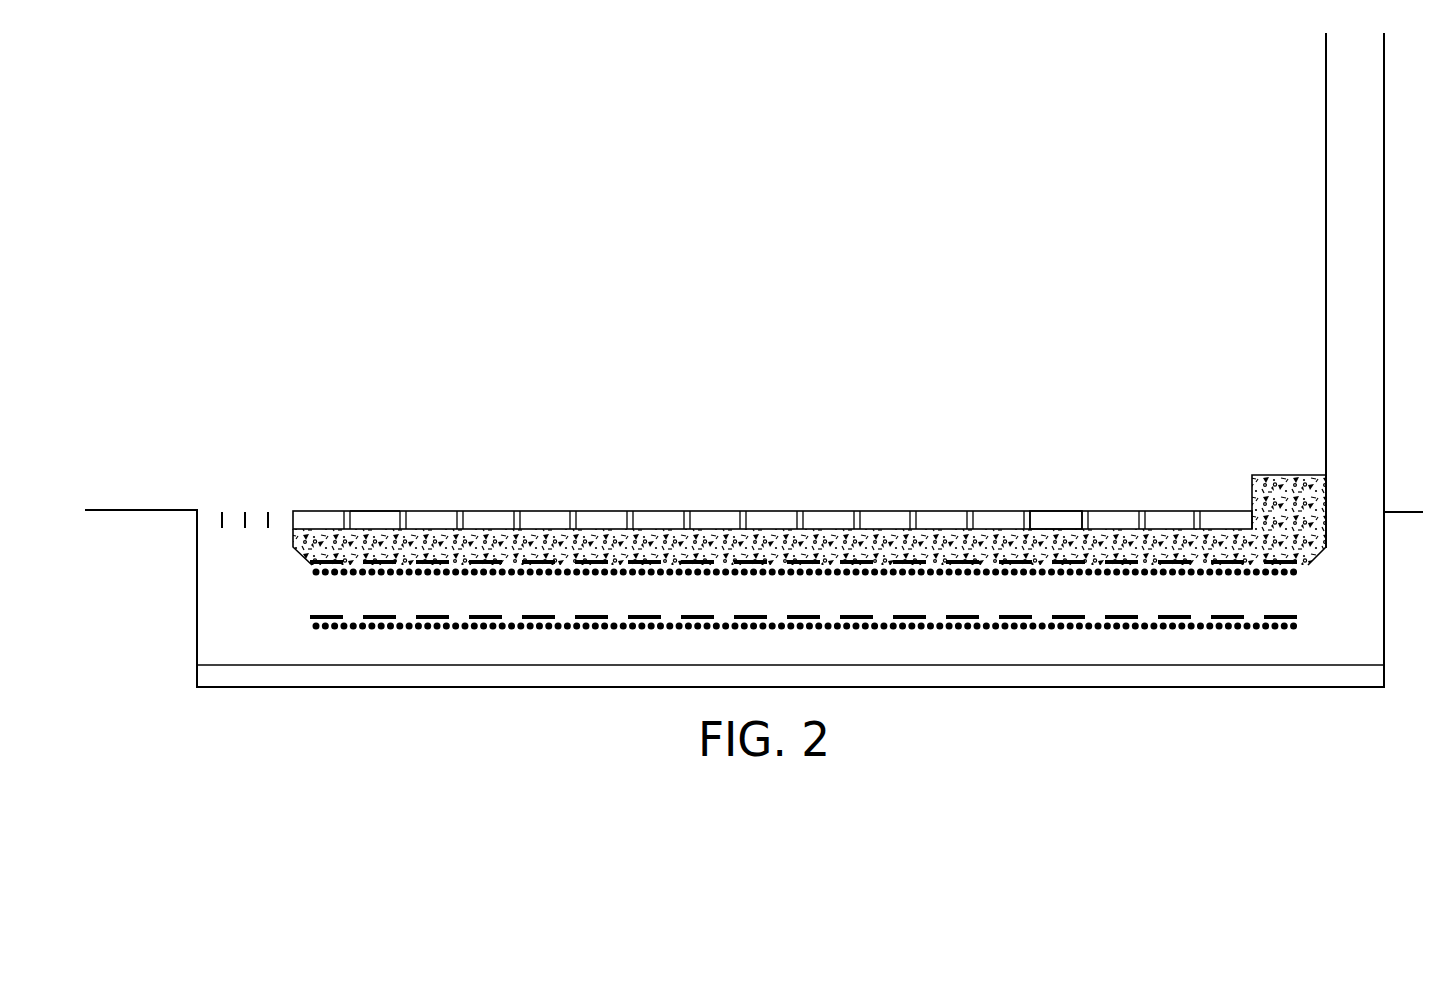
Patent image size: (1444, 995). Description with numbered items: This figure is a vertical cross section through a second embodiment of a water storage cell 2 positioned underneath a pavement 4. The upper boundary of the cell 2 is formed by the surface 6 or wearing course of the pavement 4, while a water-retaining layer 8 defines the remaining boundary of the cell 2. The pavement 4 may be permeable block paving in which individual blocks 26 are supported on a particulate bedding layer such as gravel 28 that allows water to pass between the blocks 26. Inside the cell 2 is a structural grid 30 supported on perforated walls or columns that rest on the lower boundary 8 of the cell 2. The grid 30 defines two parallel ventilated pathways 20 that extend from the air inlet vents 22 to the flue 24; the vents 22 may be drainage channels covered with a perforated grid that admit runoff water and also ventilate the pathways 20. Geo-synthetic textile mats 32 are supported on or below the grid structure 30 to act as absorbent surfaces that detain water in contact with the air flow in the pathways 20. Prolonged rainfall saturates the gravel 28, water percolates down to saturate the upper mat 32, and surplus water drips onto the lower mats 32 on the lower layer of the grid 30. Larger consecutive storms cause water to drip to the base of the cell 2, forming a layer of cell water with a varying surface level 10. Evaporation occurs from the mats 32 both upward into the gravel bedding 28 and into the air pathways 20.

The water storage cell 2 is at (205, 625).
The pavement 4 is at (830, 511).
The surface 6 is at (1055, 512).
The water-retaining layer 8 is at (197, 573).
The cell water level 10 is at (1328, 665).
The ventilated pathway 20 is at (822, 610).
The air inlet vent 22 is at (263, 497).
The flue 24 is at (1337, 112).
The blocks 26 is at (373, 510).
The gravel bedding layer 28 is at (485, 530).
The structural grid 30 is at (1300, 573).
The geo-synthetic textile mats 32 is at (1307, 557).